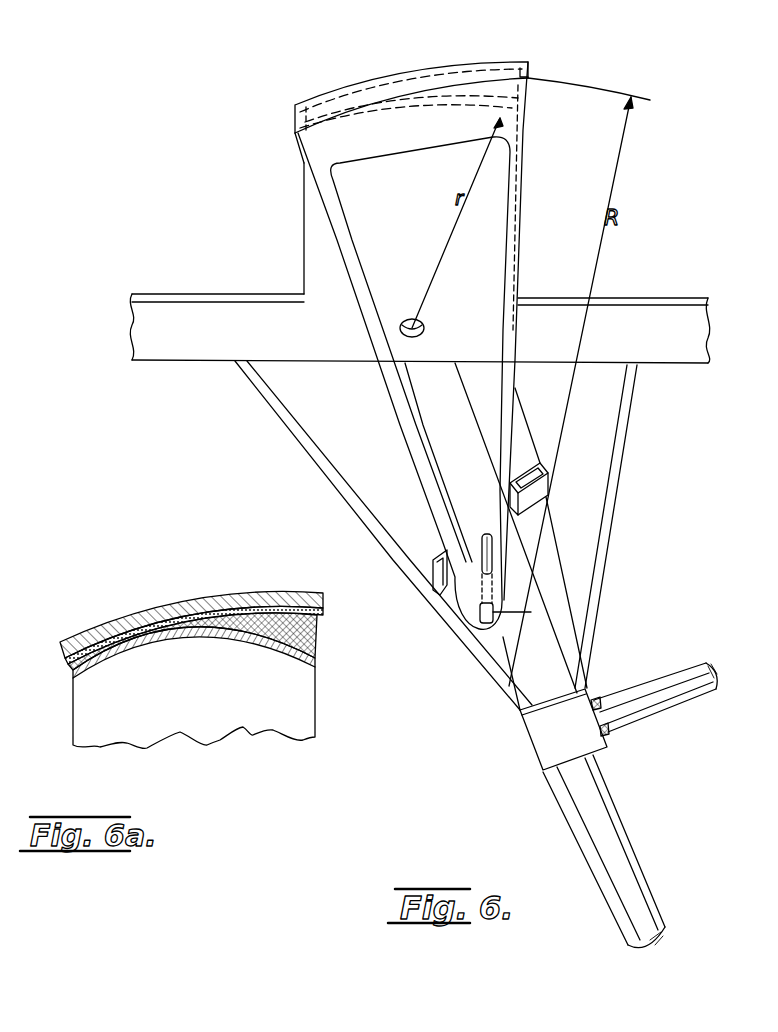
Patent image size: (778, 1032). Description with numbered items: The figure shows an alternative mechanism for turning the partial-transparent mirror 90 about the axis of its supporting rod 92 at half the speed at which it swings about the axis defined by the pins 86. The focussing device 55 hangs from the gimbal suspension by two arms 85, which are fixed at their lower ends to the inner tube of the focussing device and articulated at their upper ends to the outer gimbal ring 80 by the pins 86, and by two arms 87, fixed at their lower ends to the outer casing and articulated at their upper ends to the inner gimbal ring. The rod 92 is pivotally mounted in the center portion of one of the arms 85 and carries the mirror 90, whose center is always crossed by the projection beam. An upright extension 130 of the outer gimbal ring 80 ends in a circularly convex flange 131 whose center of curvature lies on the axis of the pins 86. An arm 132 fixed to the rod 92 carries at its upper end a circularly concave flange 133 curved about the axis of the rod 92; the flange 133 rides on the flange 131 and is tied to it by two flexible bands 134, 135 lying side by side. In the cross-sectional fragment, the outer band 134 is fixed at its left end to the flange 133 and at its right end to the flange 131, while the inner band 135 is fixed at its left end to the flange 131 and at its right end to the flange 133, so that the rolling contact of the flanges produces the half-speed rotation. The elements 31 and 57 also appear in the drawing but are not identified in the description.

In FIG. 6, the shaft 31 is at (605, 820).
In FIG. 6, the focussing device 55 is at (547, 745).
In FIG. 6, the handle rod 57 is at (668, 686).
In FIG. 6, the outer gimbal ring 80 is at (192, 348).
In FIG. 6, the arms 85 is at (438, 430).
In FIG. 6, the pins 86 is at (402, 333).
In FIG. 6, the arms 87 is at (367, 512).
In FIG. 6, the partial-transparent mirror 90 is at (548, 486).
In FIG. 6, the rod 92 is at (473, 580).
In FIG. 6, the upright extension 130 is at (318, 262).
In FIG. 6A, the upright extension 130 is at (90, 724).
In FIG. 6, the circularly convex flange 131 is at (522, 108).
In FIG. 6A, the circularly convex flange 131 is at (70, 672).
In FIG. 6, the arm 132 is at (323, 157).
In FIG. 6, the circularly concave flange 133 is at (532, 76).
In FIG. 6A, the circularly concave flange 133 is at (292, 596).
In FIG. 6, the outer flexible band 134 is at (455, 101).
In FIG. 6A, the outer flexible band 134 is at (316, 660).
In FIG. 6, the inner flexible band 135 is at (450, 56).
In FIG. 6A, the inner flexible band 135 is at (300, 613).